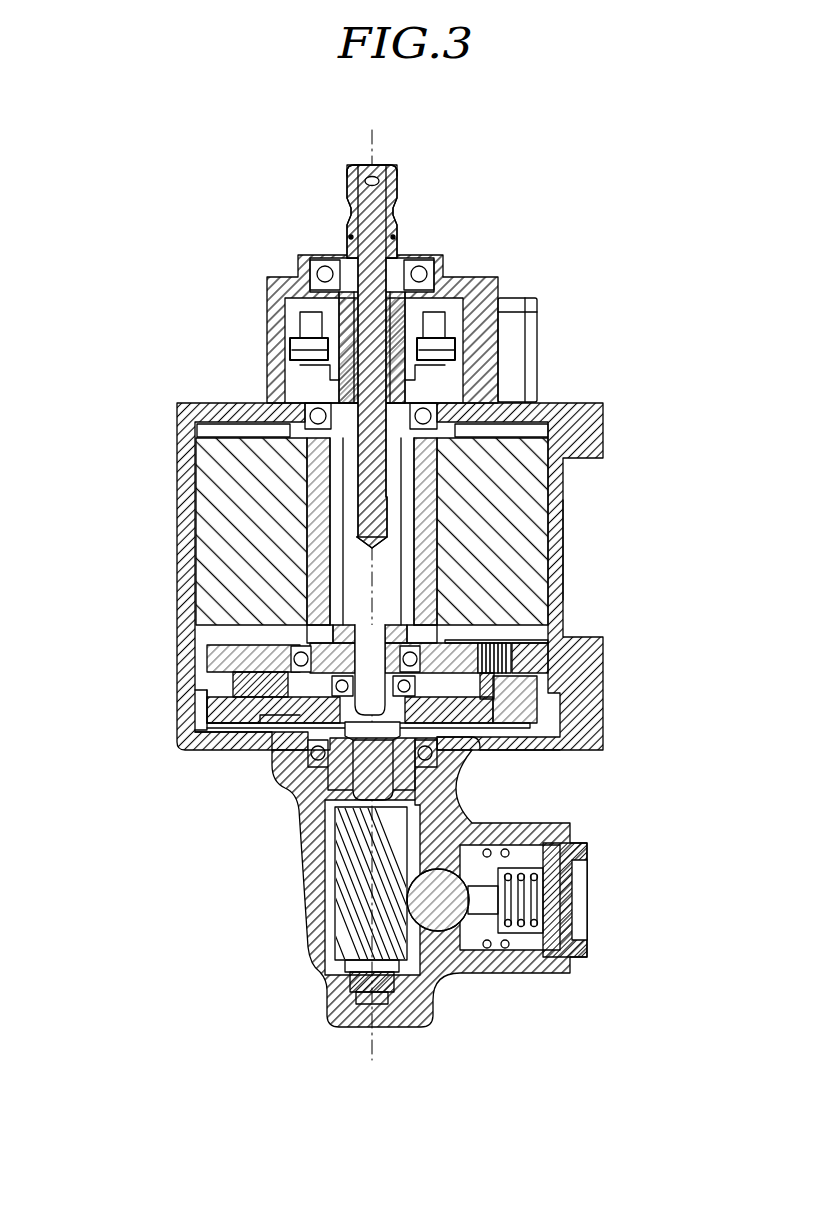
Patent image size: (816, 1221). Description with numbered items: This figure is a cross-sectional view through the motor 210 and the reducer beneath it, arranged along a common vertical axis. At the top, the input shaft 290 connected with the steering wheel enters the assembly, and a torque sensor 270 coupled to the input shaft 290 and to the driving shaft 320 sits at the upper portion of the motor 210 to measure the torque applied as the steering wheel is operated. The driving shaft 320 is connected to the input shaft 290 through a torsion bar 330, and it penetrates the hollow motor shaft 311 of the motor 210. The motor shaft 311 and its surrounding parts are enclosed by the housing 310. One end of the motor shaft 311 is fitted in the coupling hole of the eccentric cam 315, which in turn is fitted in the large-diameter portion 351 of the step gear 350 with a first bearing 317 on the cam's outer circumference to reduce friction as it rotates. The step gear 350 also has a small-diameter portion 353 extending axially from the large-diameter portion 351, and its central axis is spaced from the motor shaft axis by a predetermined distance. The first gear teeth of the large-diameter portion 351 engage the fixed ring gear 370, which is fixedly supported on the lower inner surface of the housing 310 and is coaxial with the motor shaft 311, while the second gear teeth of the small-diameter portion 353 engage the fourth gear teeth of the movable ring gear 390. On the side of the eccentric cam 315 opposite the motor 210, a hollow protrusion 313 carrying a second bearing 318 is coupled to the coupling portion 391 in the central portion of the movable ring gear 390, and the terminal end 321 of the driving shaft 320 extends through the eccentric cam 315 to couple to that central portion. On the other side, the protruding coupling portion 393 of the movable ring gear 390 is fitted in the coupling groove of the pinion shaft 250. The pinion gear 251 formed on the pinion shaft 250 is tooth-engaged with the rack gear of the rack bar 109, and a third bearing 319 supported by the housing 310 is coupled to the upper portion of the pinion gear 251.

The rack bar 109 is at (428, 933).
The motor 210 is at (574, 551).
The pinion shaft 250 is at (345, 793).
The pinion gear 251 is at (340, 912).
The torque sensor 270 is at (450, 317).
The input shaft 290 is at (398, 180).
The housing 310 is at (597, 440).
The motor shaft 311 is at (310, 476).
The protrusion 313 is at (470, 750).
The eccentric cam 315 is at (310, 640).
The first bearing 317 is at (537, 647).
The second bearing 318 is at (538, 751).
The third bearing 319 is at (272, 753).
The driving shaft 320 is at (390, 598).
The terminal end 321 is at (265, 715).
The torsion bar 330 is at (367, 218).
The step gear 350 is at (170, 674).
The large-diameter portion 351 is at (250, 652).
The small-diameter portion 353 is at (265, 683).
The fixed ring gear 370 is at (430, 688).
The movable ring gear 390 is at (432, 721).
The coupling portion 391 is at (527, 712).
The protruding coupling portion 393 is at (350, 779).